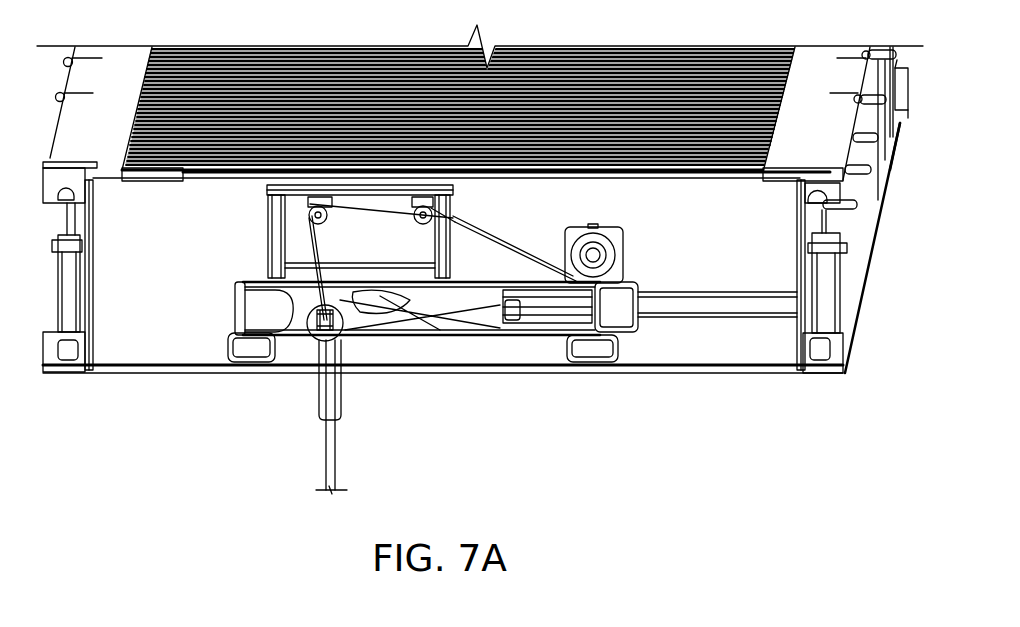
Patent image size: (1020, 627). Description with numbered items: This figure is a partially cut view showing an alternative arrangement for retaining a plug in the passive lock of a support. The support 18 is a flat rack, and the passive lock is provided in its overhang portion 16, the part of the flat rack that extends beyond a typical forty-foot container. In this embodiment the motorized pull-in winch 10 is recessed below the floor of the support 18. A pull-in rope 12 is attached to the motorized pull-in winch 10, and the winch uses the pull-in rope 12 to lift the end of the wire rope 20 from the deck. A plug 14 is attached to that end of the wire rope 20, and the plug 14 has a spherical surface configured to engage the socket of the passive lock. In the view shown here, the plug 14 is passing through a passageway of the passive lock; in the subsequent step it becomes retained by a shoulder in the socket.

The motorized pull-in winch 10 is at (627, 243).
The pull-in rope 12 is at (306, 252).
The plug 14 is at (343, 346).
The overhang portion 16 is at (483, 311).
The support 18 is at (905, 122).
The wire rope 20 is at (343, 462).